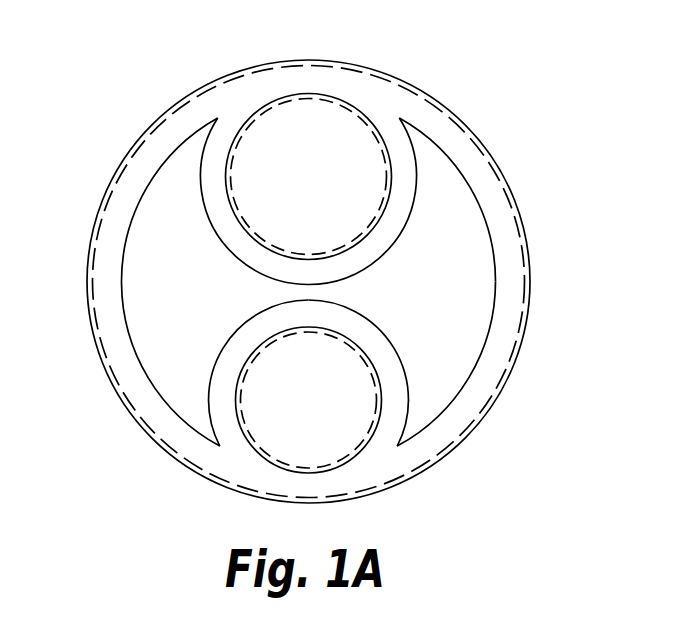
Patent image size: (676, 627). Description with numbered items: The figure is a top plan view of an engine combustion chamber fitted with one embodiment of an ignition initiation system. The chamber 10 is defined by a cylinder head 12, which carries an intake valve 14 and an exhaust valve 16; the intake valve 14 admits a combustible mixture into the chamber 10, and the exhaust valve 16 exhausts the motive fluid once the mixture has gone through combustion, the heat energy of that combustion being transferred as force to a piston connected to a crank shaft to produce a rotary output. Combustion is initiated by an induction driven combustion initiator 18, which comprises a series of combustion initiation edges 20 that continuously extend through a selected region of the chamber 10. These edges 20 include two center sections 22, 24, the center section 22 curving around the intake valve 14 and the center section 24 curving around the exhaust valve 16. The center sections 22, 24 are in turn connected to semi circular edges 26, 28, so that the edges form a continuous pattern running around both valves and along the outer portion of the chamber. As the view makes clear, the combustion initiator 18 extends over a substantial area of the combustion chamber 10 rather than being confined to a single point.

The combustion chamber 10 is at (513, 185).
The cylinder head 12 is at (238, 98).
The intake valve 14 is at (310, 112).
The exhaust valve 16 is at (347, 382).
The induction driven combustion initiator 18 is at (466, 157).
The combustion initiation edges 20 is at (211, 413).
The center section 22 is at (418, 184).
The center section 24 is at (406, 380).
The semi circular edge 26 is at (122, 292).
The semi circular edge 28 is at (498, 298).